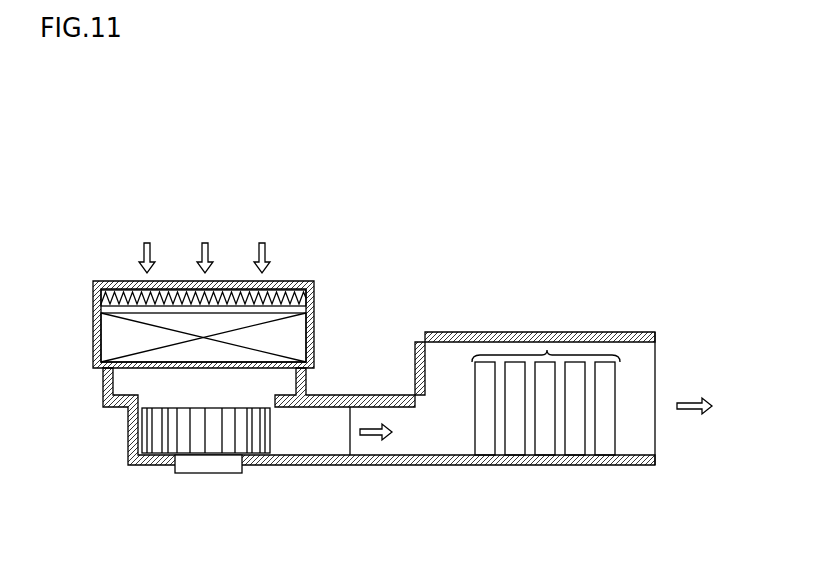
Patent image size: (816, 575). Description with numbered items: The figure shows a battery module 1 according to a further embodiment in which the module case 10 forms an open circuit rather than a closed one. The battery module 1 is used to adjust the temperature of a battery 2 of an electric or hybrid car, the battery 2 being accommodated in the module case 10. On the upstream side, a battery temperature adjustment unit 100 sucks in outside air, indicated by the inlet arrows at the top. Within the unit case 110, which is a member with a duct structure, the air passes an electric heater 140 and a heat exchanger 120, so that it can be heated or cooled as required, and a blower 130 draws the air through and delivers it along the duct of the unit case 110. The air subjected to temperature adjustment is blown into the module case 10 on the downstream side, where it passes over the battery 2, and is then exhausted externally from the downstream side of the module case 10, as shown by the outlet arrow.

The battery module 1 is at (402, 389).
The battery 2 is at (547, 352).
The module case 10 is at (592, 414).
The battery temperature adjustment unit 100 is at (374, 394).
The unit case 110 is at (327, 466).
The heat exchanger 120 is at (293, 333).
The blower 130 is at (243, 468).
The electric heater 140 is at (268, 283).